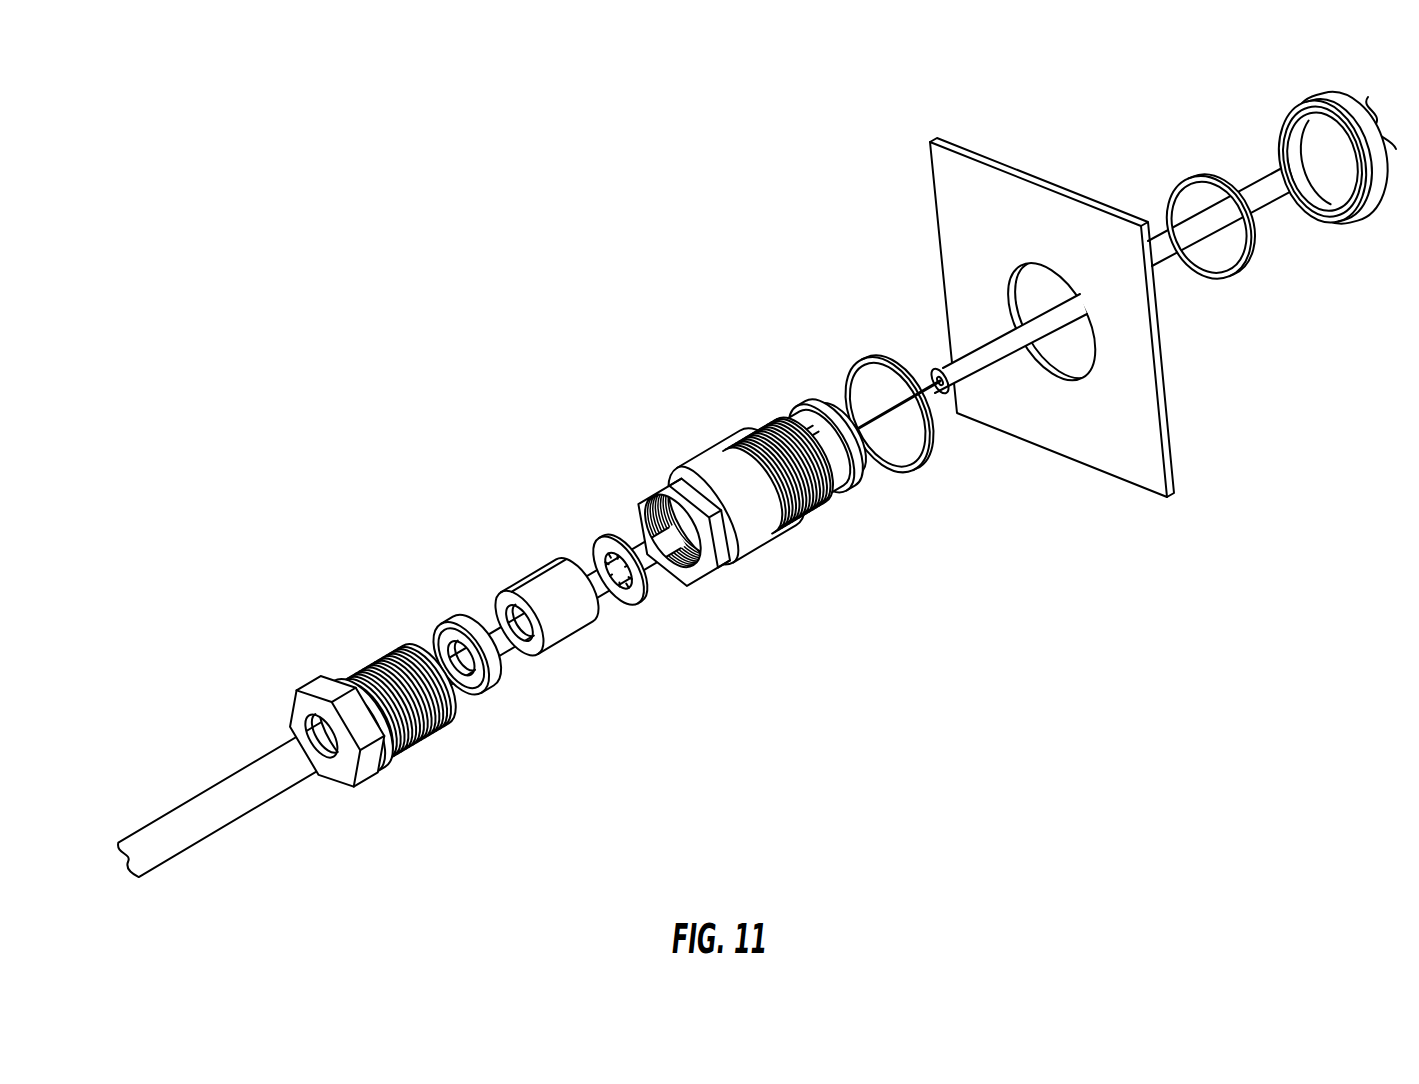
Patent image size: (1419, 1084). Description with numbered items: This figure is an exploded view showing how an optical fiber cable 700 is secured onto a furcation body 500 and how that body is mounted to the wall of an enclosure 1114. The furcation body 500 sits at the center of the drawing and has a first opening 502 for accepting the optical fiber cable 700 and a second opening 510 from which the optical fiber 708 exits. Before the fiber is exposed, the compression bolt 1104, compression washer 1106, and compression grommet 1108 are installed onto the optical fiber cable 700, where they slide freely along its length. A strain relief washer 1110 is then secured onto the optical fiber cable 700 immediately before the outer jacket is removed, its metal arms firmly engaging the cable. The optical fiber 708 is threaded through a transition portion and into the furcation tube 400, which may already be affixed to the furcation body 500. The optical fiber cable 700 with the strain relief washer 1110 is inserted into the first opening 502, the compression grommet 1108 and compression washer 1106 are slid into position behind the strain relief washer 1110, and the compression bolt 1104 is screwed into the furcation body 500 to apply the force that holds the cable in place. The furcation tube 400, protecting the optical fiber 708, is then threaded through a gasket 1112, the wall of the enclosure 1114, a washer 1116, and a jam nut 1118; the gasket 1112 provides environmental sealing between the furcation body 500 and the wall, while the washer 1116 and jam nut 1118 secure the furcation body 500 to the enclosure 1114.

The optical fiber cable 700 is at (238, 806).
The compression bolt 1104 is at (311, 689).
The compression washer 1106 is at (463, 623).
The compression grommet 1108 is at (548, 571).
The strain relief washer 1110 is at (608, 538).
The furcation body 500 is at (703, 461).
The first opening 502 is at (634, 506).
The optical fiber 708 is at (687, 581).
The second opening 510 is at (853, 466).
The gasket 1112 is at (868, 361).
The furcation tube 400 is at (961, 353).
The enclosure 1114 is at (941, 193).
The washer 1116 is at (1191, 178).
The jam nut 1118 is at (1314, 103).